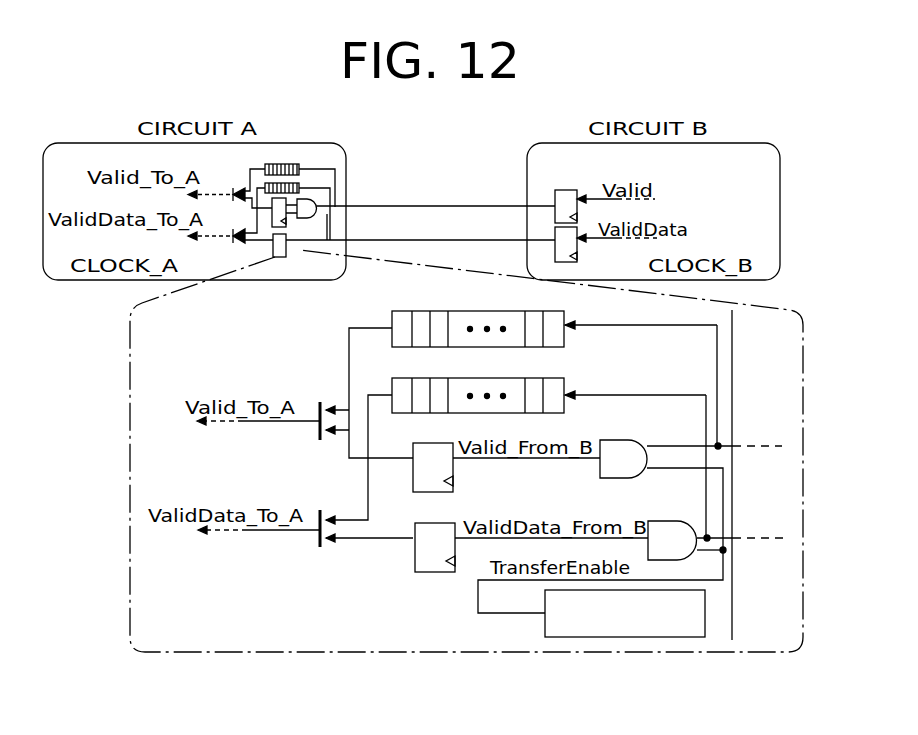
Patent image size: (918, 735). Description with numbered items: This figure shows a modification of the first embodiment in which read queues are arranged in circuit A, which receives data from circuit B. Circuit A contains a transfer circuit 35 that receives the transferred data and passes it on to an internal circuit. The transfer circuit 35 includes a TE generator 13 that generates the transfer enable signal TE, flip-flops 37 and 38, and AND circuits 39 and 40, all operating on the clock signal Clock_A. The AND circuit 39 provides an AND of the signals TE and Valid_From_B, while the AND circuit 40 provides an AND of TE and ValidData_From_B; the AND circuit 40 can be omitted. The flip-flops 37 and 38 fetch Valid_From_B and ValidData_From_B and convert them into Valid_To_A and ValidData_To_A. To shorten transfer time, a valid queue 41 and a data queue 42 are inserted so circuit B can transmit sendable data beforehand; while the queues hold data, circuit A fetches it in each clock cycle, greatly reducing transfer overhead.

The TE generator 13 is at (593, 640).
The transfer circuit 35 is at (677, 652).
The flip-flop 37 is at (415, 442).
The flip-flop 38 is at (418, 522).
The AND circuit 39 is at (612, 440).
The AND circuit 40 is at (673, 521).
The valid queue 41 is at (565, 313).
The data queue 42 is at (565, 380).